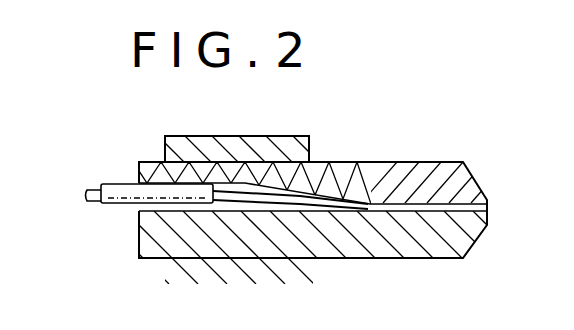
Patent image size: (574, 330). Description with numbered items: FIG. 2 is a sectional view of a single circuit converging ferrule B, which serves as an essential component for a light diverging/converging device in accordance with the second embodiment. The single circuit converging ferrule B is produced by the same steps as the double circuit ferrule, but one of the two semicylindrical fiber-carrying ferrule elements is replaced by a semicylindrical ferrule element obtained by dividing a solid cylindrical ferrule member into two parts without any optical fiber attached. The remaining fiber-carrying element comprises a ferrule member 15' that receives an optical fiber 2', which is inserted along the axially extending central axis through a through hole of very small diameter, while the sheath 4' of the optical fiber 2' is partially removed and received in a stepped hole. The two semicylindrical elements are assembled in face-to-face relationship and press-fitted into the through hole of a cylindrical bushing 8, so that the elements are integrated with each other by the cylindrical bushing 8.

The ferrule member 15' is at (321, 190).
The cylindrical bushing 8 is at (254, 137).
The sheath 4' is at (150, 161).
The optical fiber 2' is at (294, 153).
The single circuit converging ferrule B is at (518, 162).